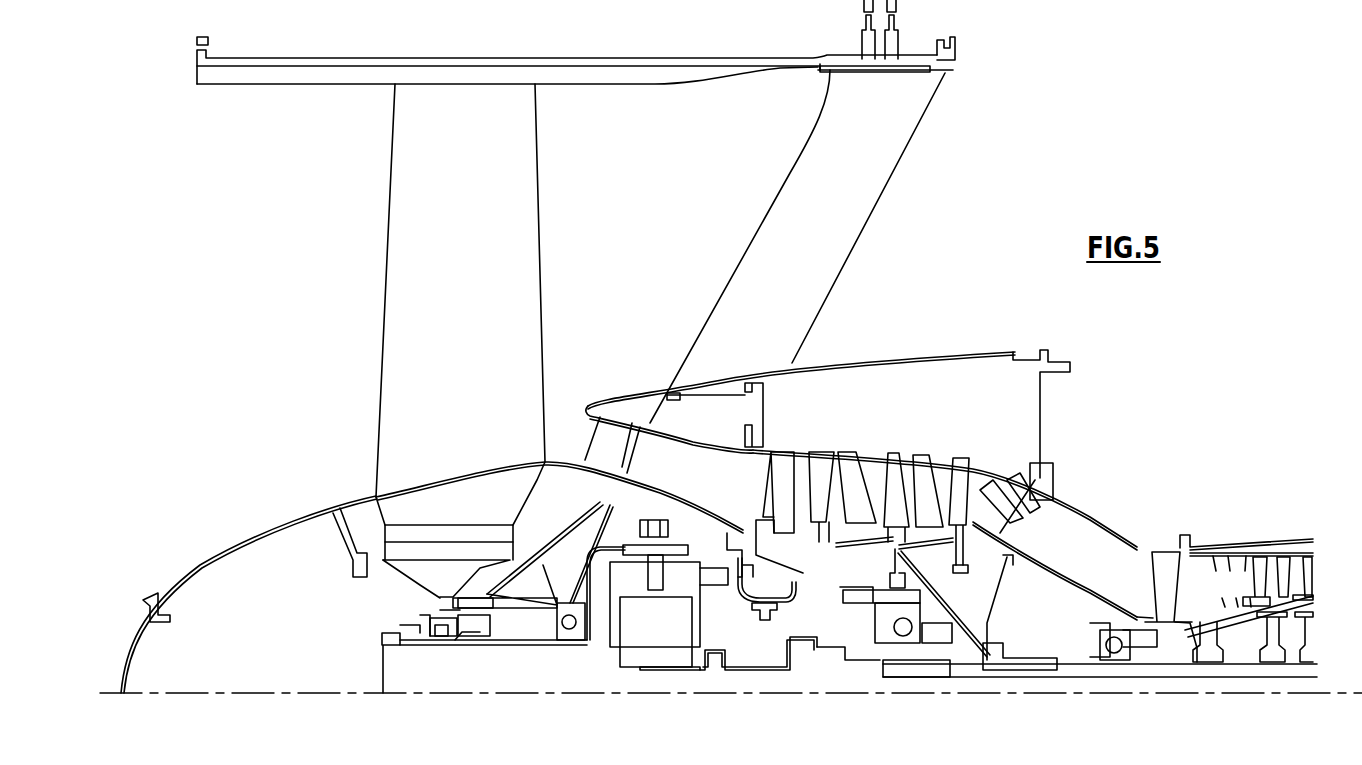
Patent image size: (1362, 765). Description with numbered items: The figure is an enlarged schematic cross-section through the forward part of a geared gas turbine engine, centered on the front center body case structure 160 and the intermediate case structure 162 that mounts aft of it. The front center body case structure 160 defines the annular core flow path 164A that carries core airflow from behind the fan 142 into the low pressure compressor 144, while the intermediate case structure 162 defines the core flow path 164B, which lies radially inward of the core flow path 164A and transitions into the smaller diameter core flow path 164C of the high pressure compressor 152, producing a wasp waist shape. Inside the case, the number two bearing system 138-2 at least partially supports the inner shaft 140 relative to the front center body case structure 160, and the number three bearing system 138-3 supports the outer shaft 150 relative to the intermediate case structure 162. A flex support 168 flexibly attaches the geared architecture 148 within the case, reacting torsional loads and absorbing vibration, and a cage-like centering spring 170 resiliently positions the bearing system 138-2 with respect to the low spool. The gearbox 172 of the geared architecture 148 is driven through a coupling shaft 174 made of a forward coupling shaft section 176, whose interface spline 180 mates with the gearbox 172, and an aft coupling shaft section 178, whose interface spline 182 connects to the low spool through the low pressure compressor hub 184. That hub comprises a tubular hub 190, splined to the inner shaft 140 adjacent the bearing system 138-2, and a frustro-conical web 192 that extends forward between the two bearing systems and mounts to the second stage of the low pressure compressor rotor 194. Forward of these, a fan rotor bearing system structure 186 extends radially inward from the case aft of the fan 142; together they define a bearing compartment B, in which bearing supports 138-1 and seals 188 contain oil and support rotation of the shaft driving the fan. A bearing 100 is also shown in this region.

The bearing 100 is at (515, 635).
The bearing supports 138-1 is at (517, 622).
The #2 bearing system 138-2 is at (830, 648).
The #3 bearing system 138-3 is at (1118, 657).
The inner shaft 140 is at (992, 675).
The fan 142 is at (485, 269).
The low pressure compressor 144 is at (895, 468).
The geared architecture 148 is at (596, 660).
The outer shaft 150 is at (1182, 656).
The high pressure compressor 152 is at (1262, 530).
The front center body case structure 160 is at (640, 397).
The intermediate case structure 162 is at (1088, 513).
The core flow path 164A is at (697, 466).
The core flow path 164B is at (1128, 571).
The core flow path 164C is at (1247, 596).
The flex support 168 is at (735, 598).
The centering spring 170 is at (717, 557).
The gearbox 172 is at (680, 640).
The coupling shaft 174 is at (763, 672).
The forward coupling shaft section 176 is at (738, 672).
The aft coupling shaft section 178 is at (820, 665).
The interface spline 180 is at (658, 672).
The interface spline 182 is at (860, 677).
The low pressure compressor hub 184 is at (937, 663).
The fan rotor bearing system structure 186 is at (552, 541).
The seals 188 is at (455, 640).
The tubular hub 190 is at (992, 658).
The frustro-conical web 192 is at (940, 600).
The low pressure compressor rotor 194 is at (927, 537).
The bearing compartment B is at (820, 623).